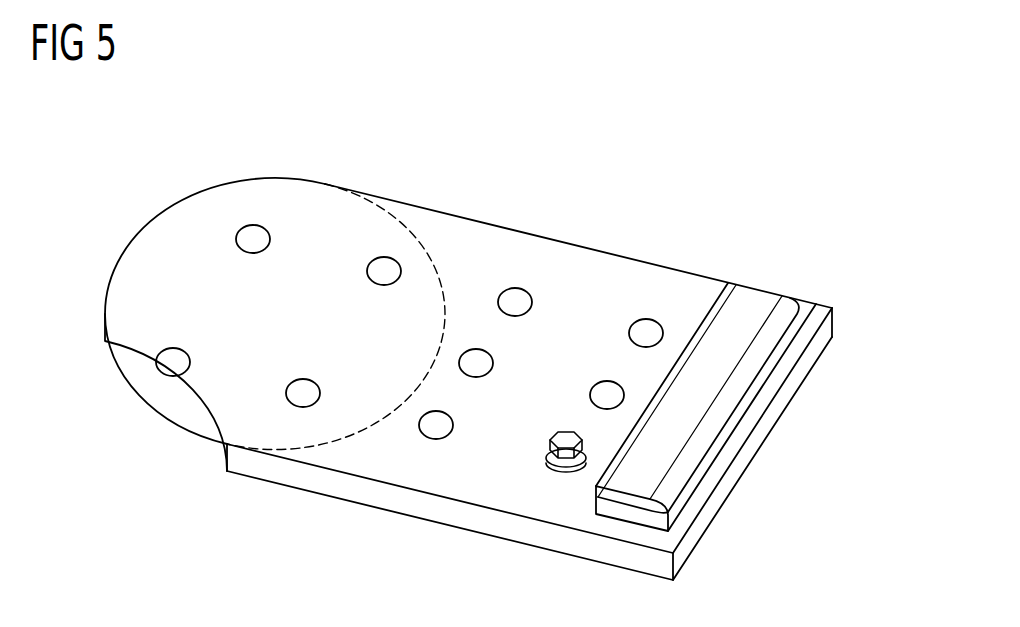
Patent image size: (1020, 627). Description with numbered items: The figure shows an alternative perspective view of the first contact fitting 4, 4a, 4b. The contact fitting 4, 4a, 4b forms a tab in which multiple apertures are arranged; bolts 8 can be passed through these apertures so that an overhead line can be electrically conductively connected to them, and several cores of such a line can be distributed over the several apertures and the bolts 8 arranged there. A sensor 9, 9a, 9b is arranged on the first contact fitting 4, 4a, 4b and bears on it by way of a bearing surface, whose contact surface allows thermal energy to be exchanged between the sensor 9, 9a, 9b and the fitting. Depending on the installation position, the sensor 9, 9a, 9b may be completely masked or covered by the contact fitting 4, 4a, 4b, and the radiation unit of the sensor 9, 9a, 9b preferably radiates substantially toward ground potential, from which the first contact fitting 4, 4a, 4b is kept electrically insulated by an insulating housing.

The first contact fitting 4 is at (468, 379).
The first contact fitting 4a is at (468, 379).
The first contact fitting 4b is at (317, 483).
The bolt 8 is at (563, 430).
The sensor 9 is at (706, 375).
The sensor 9a is at (706, 375).
The sensor 9b is at (752, 293).